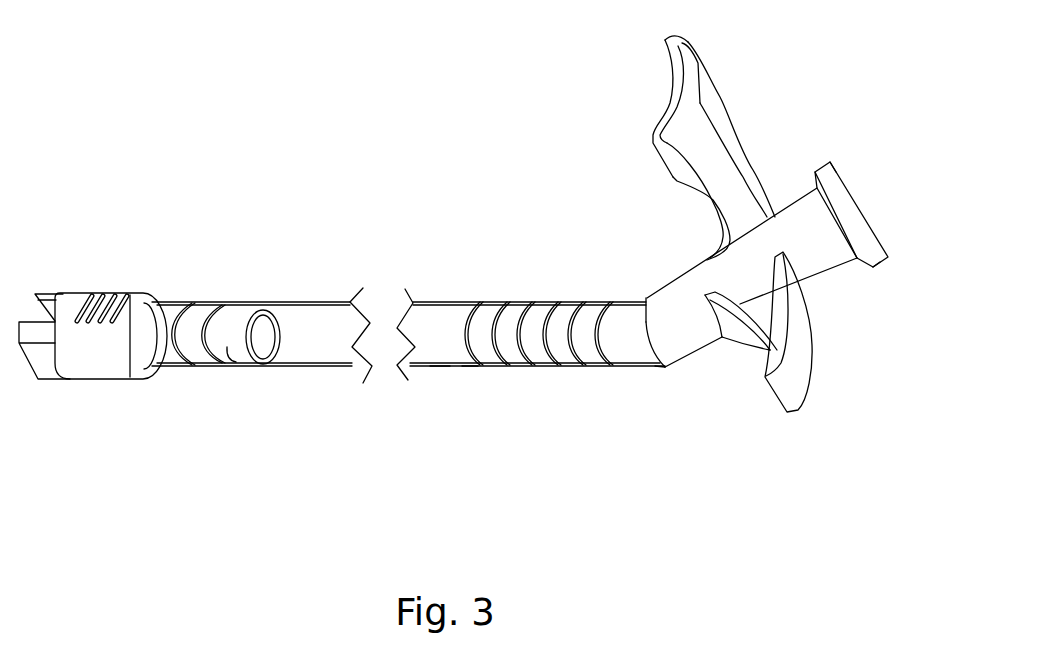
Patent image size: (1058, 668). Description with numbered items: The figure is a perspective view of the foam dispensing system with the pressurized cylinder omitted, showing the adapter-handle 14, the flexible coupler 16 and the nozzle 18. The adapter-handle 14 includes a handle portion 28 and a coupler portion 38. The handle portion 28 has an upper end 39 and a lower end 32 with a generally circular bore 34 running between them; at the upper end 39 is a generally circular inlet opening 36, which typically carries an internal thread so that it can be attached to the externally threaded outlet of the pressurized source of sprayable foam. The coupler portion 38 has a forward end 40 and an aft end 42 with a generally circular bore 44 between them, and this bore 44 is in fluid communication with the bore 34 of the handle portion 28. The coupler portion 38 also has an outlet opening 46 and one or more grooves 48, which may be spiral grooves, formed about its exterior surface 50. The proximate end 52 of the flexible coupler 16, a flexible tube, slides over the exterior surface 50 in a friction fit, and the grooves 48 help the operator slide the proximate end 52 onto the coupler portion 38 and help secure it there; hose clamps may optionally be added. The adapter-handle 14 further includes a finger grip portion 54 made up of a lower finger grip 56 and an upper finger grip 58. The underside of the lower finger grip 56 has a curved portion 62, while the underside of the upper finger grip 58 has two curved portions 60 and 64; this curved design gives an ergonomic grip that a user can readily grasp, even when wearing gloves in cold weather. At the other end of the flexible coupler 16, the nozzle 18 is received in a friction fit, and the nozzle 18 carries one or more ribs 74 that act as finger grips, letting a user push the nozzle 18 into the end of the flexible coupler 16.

The adapter-handle 14 is at (687, 396).
The flexible coupler 16 is at (318, 300).
The nozzle 18 is at (148, 294).
The handle portion 28 is at (827, 275).
The lower end 32 is at (660, 367).
The generally circular bore 34 is at (861, 204).
The inlet opening 36 is at (832, 163).
The coupler portion 38 is at (518, 366).
The upper end 39 is at (883, 262).
The forward end 40 is at (647, 296).
The aft end 42 is at (461, 302).
The generally circular bore 44 is at (440, 333).
The outlet opening 46 is at (441, 367).
The grooves 48 is at (500, 302).
The exterior surface 50 is at (618, 367).
The proximate end 52 is at (470, 367).
The finger grip portion 54 is at (739, 134).
The lower finger grip 56 is at (815, 392).
The upper finger grip 58 is at (716, 78).
The curved portion 60 is at (668, 101).
The curved portion 62 is at (760, 346).
The curved portion 64 is at (713, 200).
The ribs 74 is at (100, 292).